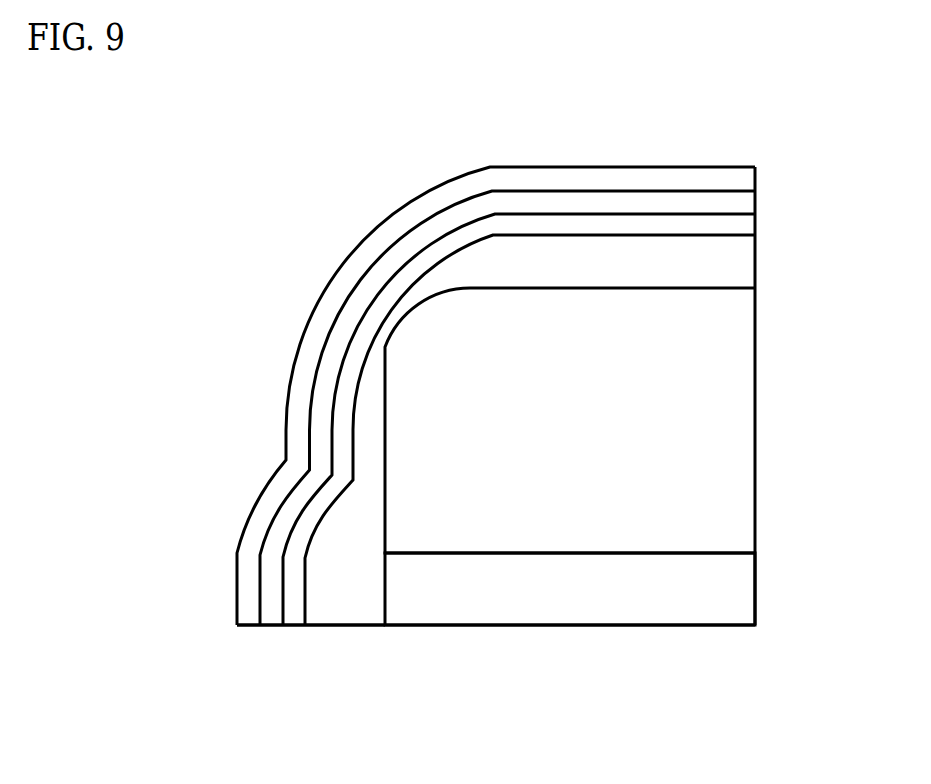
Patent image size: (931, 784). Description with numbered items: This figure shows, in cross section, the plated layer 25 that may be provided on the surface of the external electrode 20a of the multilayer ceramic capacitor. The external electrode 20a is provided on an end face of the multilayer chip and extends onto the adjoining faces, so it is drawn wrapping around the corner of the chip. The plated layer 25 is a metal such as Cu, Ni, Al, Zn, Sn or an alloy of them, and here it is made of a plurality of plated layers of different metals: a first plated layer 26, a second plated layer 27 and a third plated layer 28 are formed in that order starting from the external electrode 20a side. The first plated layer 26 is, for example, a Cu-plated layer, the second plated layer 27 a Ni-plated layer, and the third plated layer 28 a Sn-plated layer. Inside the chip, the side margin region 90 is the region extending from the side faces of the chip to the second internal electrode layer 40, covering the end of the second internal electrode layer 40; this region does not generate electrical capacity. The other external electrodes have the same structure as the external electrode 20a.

The plated layer 25 is at (248, 228).
The first plated layer 26 is at (365, 330).
The second plated layer 27 is at (362, 298).
The third plated layer 28 is at (362, 262).
The side margin region 90 is at (703, 458).
The second internal electrode layer 40 is at (660, 585).
The external electrode 20a is at (342, 593).